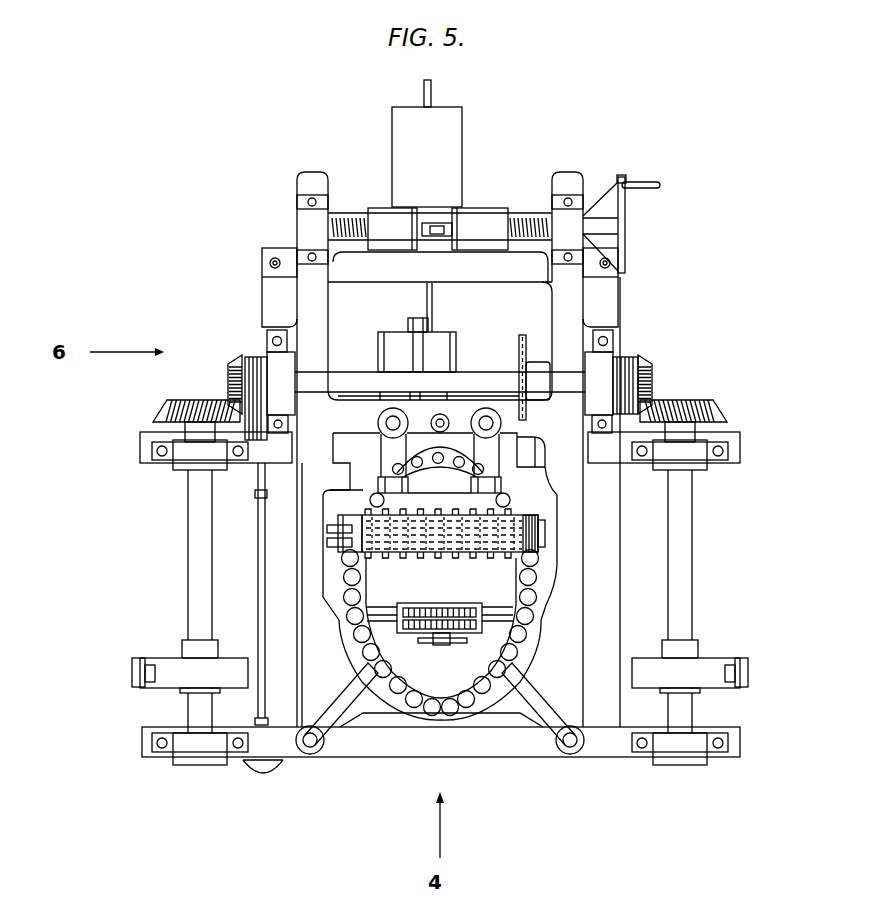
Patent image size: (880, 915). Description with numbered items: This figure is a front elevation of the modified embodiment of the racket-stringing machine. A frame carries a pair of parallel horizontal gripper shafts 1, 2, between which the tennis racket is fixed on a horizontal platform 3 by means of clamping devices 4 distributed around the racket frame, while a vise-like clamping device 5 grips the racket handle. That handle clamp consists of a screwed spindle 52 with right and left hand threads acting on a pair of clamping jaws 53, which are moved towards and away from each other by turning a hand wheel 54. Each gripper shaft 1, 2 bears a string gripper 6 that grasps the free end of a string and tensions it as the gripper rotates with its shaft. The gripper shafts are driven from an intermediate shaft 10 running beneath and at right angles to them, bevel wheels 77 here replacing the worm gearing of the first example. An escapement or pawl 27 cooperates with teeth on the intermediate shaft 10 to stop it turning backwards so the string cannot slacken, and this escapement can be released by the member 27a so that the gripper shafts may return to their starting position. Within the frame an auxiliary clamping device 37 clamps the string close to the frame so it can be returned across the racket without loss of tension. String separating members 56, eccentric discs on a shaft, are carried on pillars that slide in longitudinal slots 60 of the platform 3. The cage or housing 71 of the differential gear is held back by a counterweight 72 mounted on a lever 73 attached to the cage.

The gripper shaft 1 is at (197, 529).
The gripper shaft 2 is at (685, 569).
The platform 3 is at (355, 628).
The clamping device 4 is at (390, 482).
The clamping device 5 is at (487, 242).
The string gripper 6 is at (165, 667).
The intermediate shaft 10 is at (467, 383).
The escapement or pawl 27 is at (252, 356).
The member for operating the handle 27a is at (276, 768).
The auxiliary clamping device 37 is at (465, 630).
The screwed spindle 52 is at (347, 227).
The clamping jaws 53 is at (403, 217).
The hand wheel 54 is at (625, 217).
The separating members 56 is at (430, 560).
The longitudinal slots 60 is at (352, 545).
The cage or housing 71 is at (393, 318).
The counterweight 72 is at (463, 148).
The lever 73 is at (432, 87).
The bevel wheels 77 is at (213, 378).